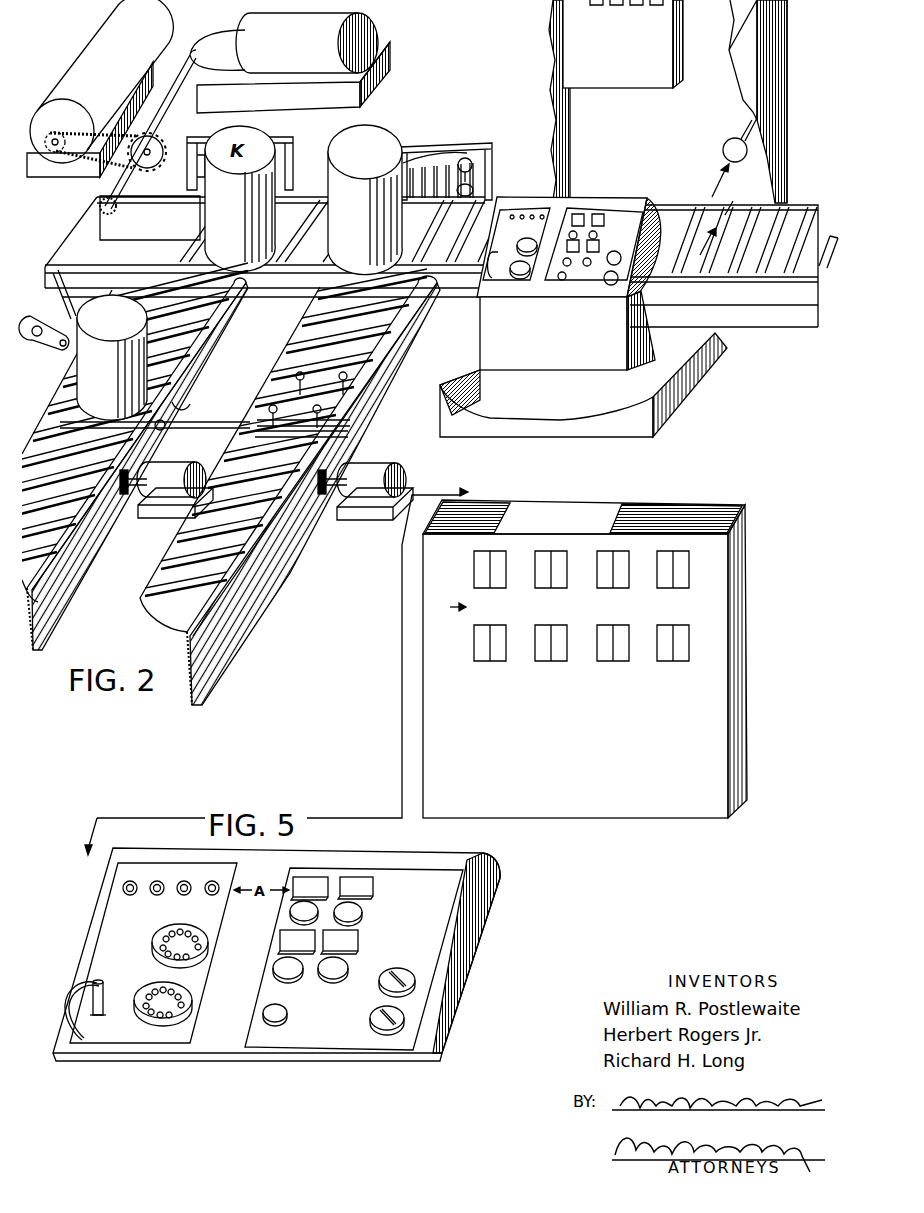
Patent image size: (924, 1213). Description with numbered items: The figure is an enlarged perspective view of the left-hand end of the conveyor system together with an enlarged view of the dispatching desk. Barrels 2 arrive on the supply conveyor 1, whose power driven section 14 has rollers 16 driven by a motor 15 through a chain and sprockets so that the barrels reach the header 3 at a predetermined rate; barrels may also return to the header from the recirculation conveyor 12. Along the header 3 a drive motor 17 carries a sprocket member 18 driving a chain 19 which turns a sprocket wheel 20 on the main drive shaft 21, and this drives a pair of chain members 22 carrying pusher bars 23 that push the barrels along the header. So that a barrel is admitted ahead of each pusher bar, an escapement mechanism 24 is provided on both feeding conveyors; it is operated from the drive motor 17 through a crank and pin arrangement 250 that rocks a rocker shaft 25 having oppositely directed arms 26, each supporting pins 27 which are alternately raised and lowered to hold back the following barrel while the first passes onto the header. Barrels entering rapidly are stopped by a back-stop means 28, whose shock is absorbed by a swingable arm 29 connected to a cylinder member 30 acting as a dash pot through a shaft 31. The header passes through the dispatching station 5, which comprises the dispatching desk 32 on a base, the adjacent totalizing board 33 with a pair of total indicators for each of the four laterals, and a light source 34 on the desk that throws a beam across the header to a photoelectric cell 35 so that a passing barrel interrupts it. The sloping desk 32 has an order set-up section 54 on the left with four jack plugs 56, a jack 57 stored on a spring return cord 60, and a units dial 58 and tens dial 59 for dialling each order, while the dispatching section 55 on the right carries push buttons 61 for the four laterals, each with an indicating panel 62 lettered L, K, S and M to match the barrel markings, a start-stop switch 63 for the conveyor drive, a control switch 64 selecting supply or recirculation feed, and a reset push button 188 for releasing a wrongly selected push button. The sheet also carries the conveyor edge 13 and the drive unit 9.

In FIG. 2, the supply conveyor 1 is at (92, 548).
In FIG. 2, the barrels 2 is at (385, 133).
In FIG. 2, the header conveyor 3 is at (270, 310).
In FIG. 2, the dispatching station 5 is at (792, 63).
In FIG. 2, the drive motor 9 is at (210, 30).
In FIG. 2, the recirculation conveyor 12 is at (283, 567).
In FIG. 2, the conveyor side rail 13 is at (53, 612).
In FIG. 2, the power driven section 14 is at (205, 400).
In FIG. 2, the motor 15 is at (177, 463).
In FIG. 2, the rollers 16 is at (178, 327).
In FIG. 2, the drive motor 17 is at (88, 22).
In FIG. 2, the sprocket member 18 is at (54, 152).
In FIG. 2, the chain 19 is at (85, 160).
In FIG. 2, the sprocket wheel 20 is at (158, 144).
In FIG. 2, the main drive shaft 21 is at (173, 80).
In FIG. 2, the chain members 22 is at (110, 270).
In FIG. 2, the pusher bars 23 is at (86, 345).
In FIG. 2, the escapement mechanism 24 is at (348, 377).
In FIG. 2, the rocker shaft 25 is at (235, 421).
In FIG. 2, the arms 26 is at (357, 400).
In FIG. 2, the pins 27 is at (350, 425).
In FIG. 2, the back-stop means 28 is at (440, 140).
In FIG. 2, the swingable arm 29 is at (432, 175).
In FIG. 2, the cylinder member 30 is at (474, 160).
In FIG. 2, the shaft 31 is at (475, 186).
In FIG. 2, the dispatching desk 32 is at (560, 338).
In FIG. 5, the dispatching desk 32 is at (445, 1055).
In FIG. 2, the totalizing board 33 is at (650, 840).
In FIG. 2, the light source 34 is at (734, 264).
In FIG. 2, the photoelectric cell 35 is at (725, 140).
In FIG. 5, the order set-up section 54 is at (212, 977).
In FIG. 5, the dispatching section 55 is at (248, 1030).
In FIG. 5, the jack plugs 56 is at (211, 881).
In FIG. 5, the jack 57 is at (101, 980).
In FIG. 5, the units dial 58 is at (153, 940).
In FIG. 5, the tens dial 59 is at (152, 988).
In FIG. 5, the spring return cord 60 is at (67, 983).
In FIG. 5, the push buttons 61 is at (322, 982).
In FIG. 5, the indicating panel 62 is at (370, 941).
In FIG. 5, the start-stop switch 63 is at (370, 1018).
In FIG. 5, the control switch 64 is at (405, 968).
In FIG. 5, the reset push button 188 is at (270, 1003).
In FIG. 2, the crank and pin arrangement 250 is at (53, 350).